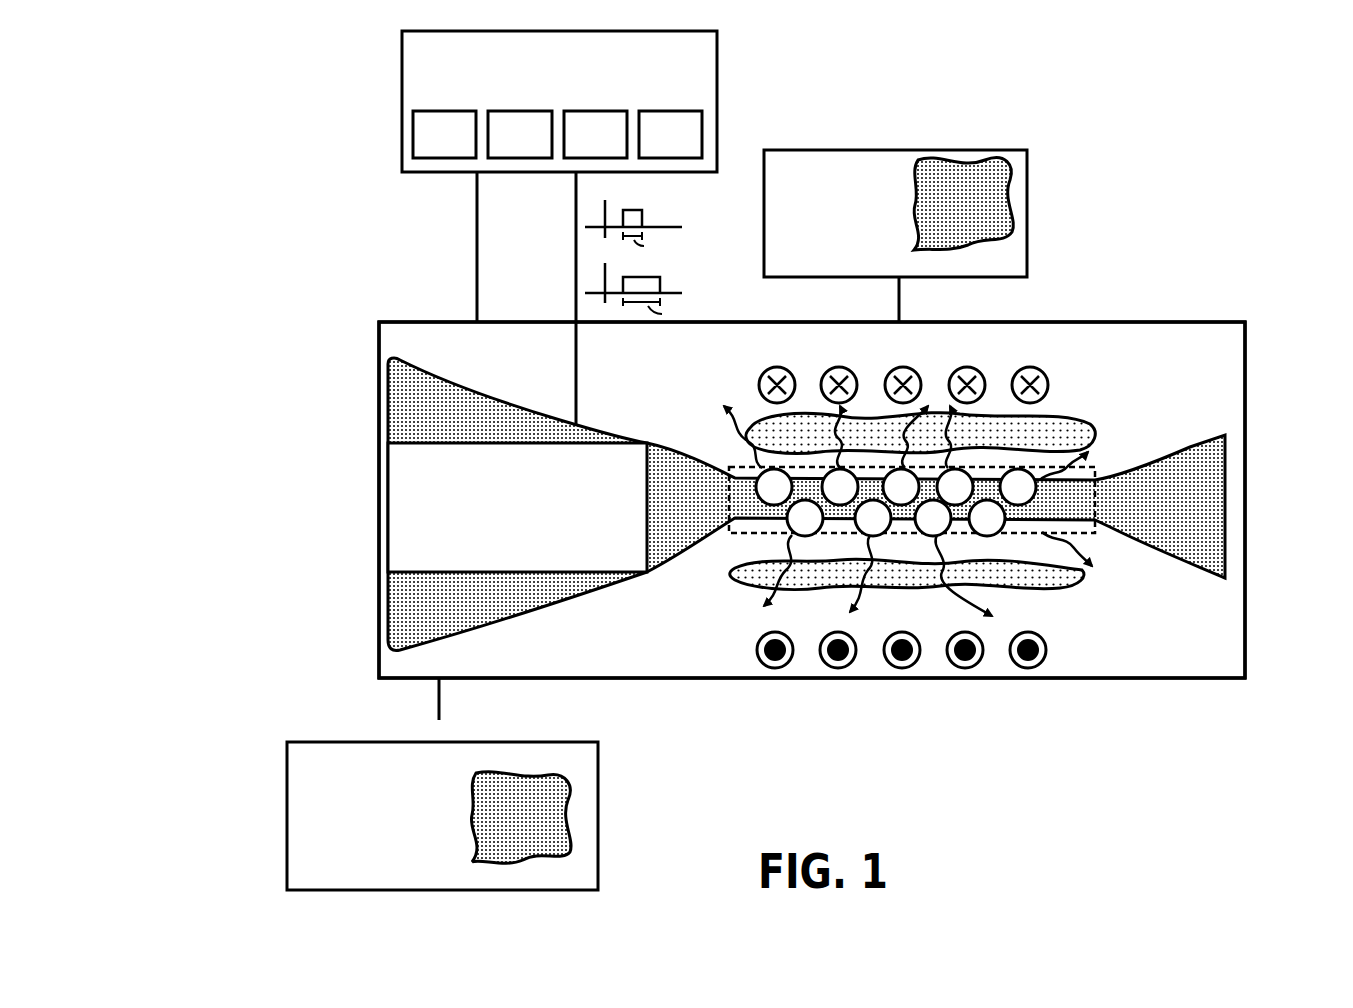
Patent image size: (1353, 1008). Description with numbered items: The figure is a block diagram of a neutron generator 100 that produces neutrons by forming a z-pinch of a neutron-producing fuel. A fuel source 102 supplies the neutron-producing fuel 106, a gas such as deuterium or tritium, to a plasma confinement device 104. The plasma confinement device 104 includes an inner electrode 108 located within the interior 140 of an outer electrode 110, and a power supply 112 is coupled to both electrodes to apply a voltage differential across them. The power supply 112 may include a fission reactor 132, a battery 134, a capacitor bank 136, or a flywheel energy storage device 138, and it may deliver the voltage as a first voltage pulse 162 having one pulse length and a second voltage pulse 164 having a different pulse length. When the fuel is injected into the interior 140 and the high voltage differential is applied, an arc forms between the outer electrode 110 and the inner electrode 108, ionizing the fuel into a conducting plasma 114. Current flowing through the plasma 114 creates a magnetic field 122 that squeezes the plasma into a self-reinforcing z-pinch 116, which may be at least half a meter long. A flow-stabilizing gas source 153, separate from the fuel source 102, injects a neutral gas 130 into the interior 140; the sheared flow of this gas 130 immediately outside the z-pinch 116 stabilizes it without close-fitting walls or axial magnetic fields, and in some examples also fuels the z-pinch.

The neutron generator 100 is at (250, 176).
The fuel source 102 is at (442, 784).
The plasma confinement device 104 is at (1162, 300).
The neutron-producing fuel 106 is at (521, 817).
The inner electrode 108 is at (517, 507).
The outer electrode 110 is at (437, 322).
The power supply 112 is at (559, 237).
The plasma 114 is at (460, 608).
The z-pinch 116 is at (1096, 465).
The magnetic field 122 is at (1028, 337).
The gas 130 is at (1130, 632).
The fission reactor 132 is at (444, 134).
The battery 134 is at (520, 134).
The capacitor bank 136 is at (595, 134).
The flywheel energy storage device 138 is at (670, 134).
The interior 140 is at (851, 482).
The flow-stabilizing gas source 153 is at (895, 236).
The voltage pulse 162 is at (654, 204).
The voltage pulse 164 is at (668, 272).